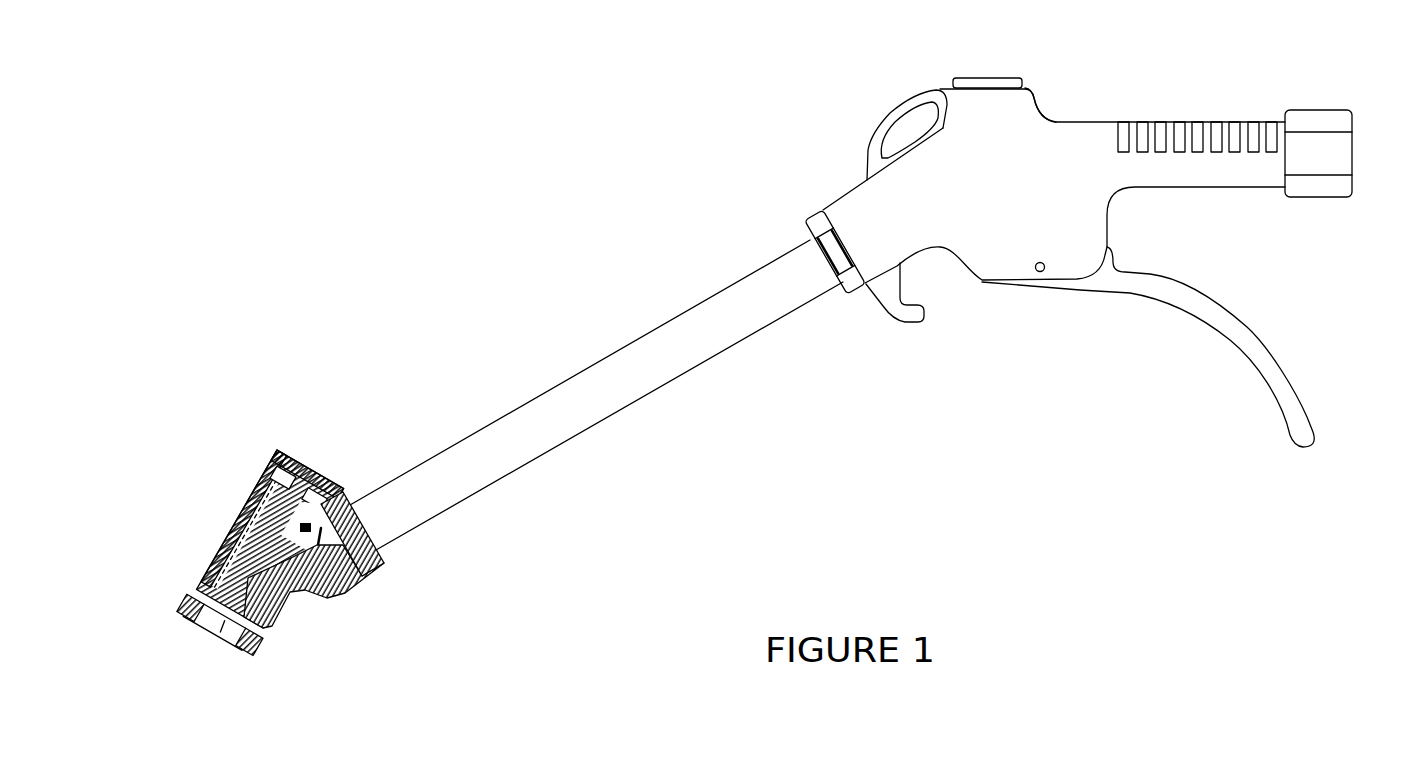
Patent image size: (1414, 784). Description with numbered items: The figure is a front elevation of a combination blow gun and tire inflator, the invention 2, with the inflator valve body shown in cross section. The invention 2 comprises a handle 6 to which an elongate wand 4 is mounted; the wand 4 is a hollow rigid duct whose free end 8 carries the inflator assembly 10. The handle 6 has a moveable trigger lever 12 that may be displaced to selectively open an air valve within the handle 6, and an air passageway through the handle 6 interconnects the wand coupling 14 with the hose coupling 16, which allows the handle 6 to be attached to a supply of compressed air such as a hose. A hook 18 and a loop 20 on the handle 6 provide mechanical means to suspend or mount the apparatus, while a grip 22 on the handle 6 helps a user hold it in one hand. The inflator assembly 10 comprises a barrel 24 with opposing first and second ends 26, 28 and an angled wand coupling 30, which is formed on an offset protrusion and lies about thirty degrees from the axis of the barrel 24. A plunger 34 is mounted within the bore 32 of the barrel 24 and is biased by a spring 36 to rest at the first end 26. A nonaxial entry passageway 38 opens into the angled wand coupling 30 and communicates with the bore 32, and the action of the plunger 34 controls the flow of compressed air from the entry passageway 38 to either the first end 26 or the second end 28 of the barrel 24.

The invention 2 is at (1012, 313).
The wand 4 is at (585, 368).
The handle 6 is at (1045, 112).
The free end 8 is at (382, 547).
The inflator assembly 10 is at (218, 540).
The trigger lever 12 is at (1261, 342).
The wand coupling 14 is at (808, 216).
The hose coupling 16 is at (1318, 110).
The hook 18 is at (899, 313).
The loop 20 is at (893, 115).
The grip 22 is at (1180, 122).
The barrel 24 is at (262, 473).
The first end 26 is at (281, 452).
The second end 28 is at (183, 615).
The angled wand coupling 30 is at (365, 582).
The bore 32 is at (222, 627).
The plunger 34 is at (270, 627).
The spring 36 is at (235, 507).
The nonaxial entry passageway 38 is at (340, 590).